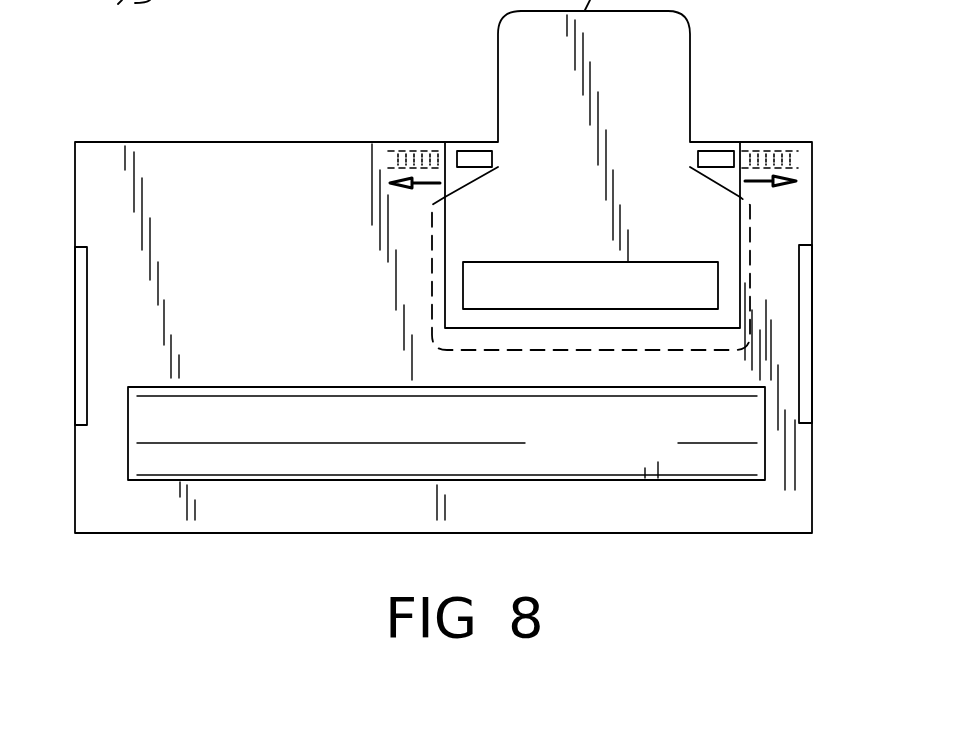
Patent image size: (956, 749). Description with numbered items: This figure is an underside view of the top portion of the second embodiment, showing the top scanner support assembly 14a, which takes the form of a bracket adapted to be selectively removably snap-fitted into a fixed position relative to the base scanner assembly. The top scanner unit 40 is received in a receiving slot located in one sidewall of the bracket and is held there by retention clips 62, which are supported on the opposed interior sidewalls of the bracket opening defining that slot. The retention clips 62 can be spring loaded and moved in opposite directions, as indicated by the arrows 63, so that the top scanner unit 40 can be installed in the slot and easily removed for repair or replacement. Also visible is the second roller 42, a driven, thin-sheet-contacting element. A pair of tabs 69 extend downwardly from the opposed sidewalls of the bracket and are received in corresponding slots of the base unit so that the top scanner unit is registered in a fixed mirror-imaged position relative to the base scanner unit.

The top scanner support assembly 14a is at (253, 540).
The top scanner unit 40 is at (652, 230).
The second roller 42 is at (360, 457).
The retention clips 62 is at (467, 151).
The arrows 63 is at (420, 173).
The tabs 69 is at (74, 343).